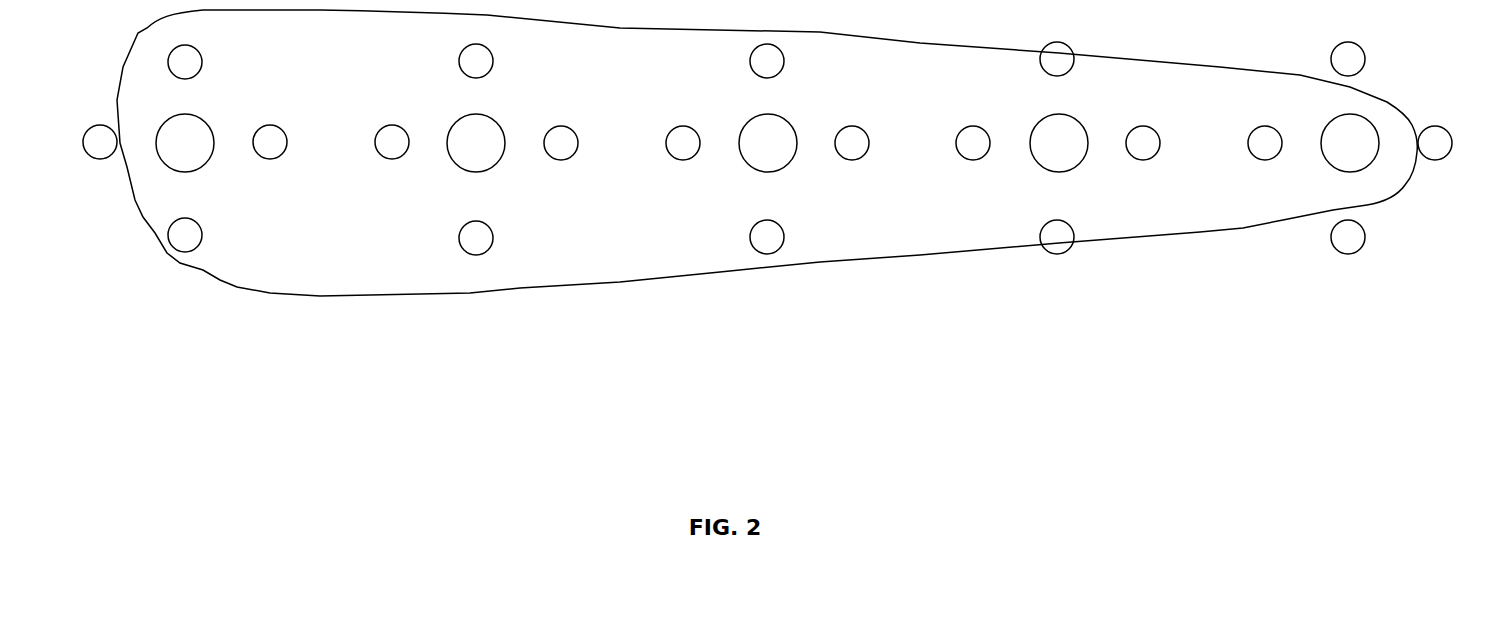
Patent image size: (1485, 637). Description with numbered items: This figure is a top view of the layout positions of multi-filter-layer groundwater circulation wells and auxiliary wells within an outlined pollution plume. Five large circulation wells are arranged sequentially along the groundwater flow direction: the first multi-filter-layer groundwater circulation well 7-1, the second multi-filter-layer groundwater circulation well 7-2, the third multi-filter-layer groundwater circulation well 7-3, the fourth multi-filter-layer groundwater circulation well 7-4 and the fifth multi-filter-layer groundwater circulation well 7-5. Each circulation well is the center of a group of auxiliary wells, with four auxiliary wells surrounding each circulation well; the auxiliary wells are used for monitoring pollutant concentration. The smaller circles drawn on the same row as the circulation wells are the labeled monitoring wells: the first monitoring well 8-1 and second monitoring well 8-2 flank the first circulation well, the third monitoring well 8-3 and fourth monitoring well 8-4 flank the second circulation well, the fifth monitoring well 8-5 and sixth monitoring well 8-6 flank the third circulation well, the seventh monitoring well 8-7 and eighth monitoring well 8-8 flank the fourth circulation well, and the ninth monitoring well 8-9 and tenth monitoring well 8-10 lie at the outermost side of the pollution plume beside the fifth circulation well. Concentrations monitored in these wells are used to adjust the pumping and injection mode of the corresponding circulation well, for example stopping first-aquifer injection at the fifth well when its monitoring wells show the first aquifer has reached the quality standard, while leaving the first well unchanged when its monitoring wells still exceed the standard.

The first multi-filter-layer groundwater circulation well 7-1 is at (185, 155).
The second multi-filter-layer groundwater circulation well 7-2 is at (476, 155).
The third multi-filter-layer groundwater circulation well 7-3 is at (768, 155).
The fourth multi-filter-layer groundwater circulation well 7-4 is at (1059, 155).
The fifth multi-filter-layer groundwater circulation well 7-5 is at (1350, 155).
The first monitoring well 8-1 is at (100, 160).
The second monitoring well 8-2 is at (270, 160).
The third monitoring well 8-3 is at (392, 160).
The fourth monitoring well 8-4 is at (561, 161).
The fifth monitoring well 8-5 is at (683, 161).
The sixth monitoring well 8-6 is at (852, 161).
The seventh monitoring well 8-7 is at (973, 161).
The eighth monitoring well 8-8 is at (1143, 161).
The ninth monitoring well 8-9 is at (1265, 161).
The tenth monitoring well 8-10 is at (1435, 161).